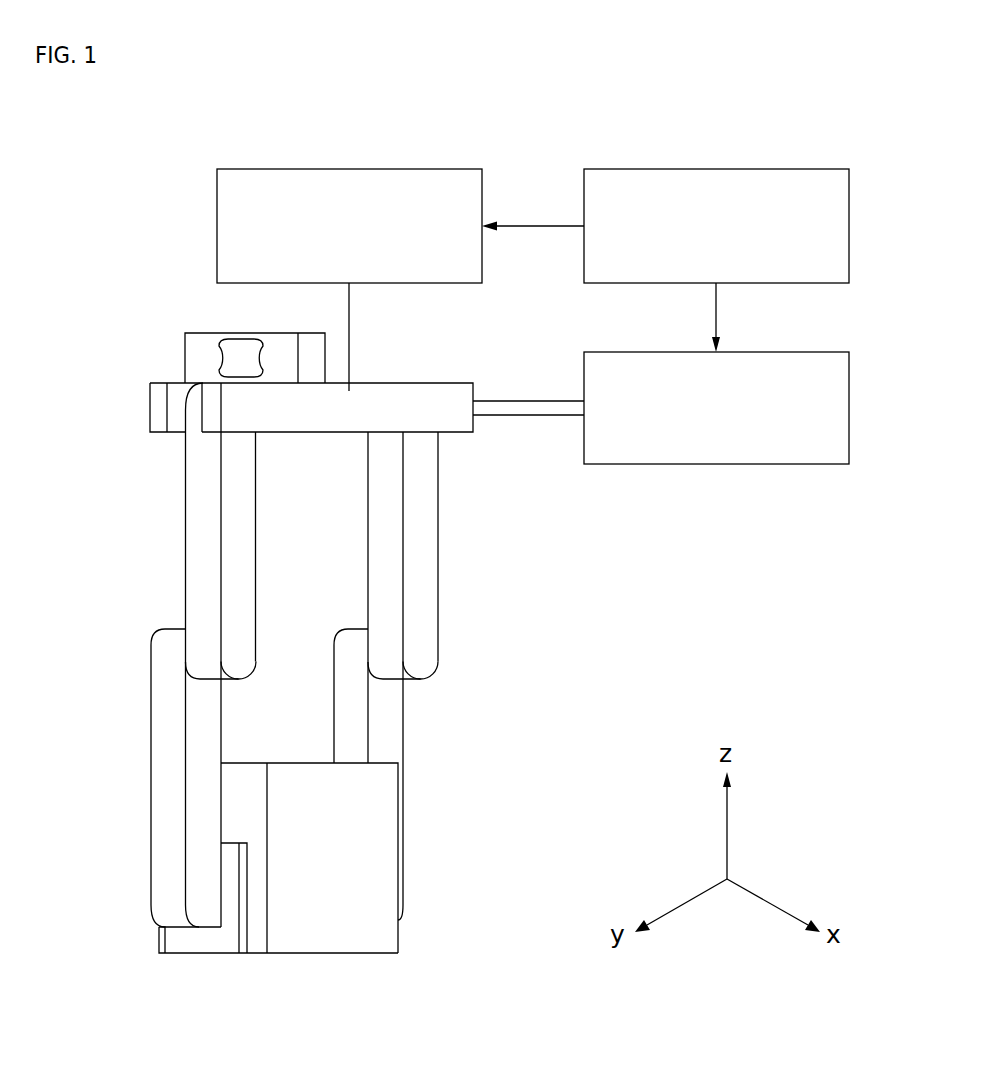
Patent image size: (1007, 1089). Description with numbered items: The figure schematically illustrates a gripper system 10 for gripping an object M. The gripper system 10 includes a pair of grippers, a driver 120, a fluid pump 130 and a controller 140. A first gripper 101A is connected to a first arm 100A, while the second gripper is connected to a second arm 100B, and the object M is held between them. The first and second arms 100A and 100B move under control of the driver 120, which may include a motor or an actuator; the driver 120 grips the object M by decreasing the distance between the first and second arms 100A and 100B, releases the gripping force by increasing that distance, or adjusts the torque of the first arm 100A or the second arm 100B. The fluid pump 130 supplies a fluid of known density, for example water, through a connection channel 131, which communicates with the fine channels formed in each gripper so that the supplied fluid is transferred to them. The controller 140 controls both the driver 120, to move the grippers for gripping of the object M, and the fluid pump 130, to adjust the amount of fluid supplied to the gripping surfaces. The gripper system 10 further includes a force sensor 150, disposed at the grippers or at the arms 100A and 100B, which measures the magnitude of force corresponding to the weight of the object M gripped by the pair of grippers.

The gripper system 10 is at (940, 127).
The driver 120 is at (433, 169).
The controller 140 is at (795, 169).
The fluid pump 130 is at (792, 464).
The connection channel 131 is at (528, 415).
The force sensor 150 is at (185, 353).
The first arm 100A is at (155, 710).
The second arm 100B is at (393, 715).
The first gripper 101A is at (205, 945).
The object M is at (347, 943).